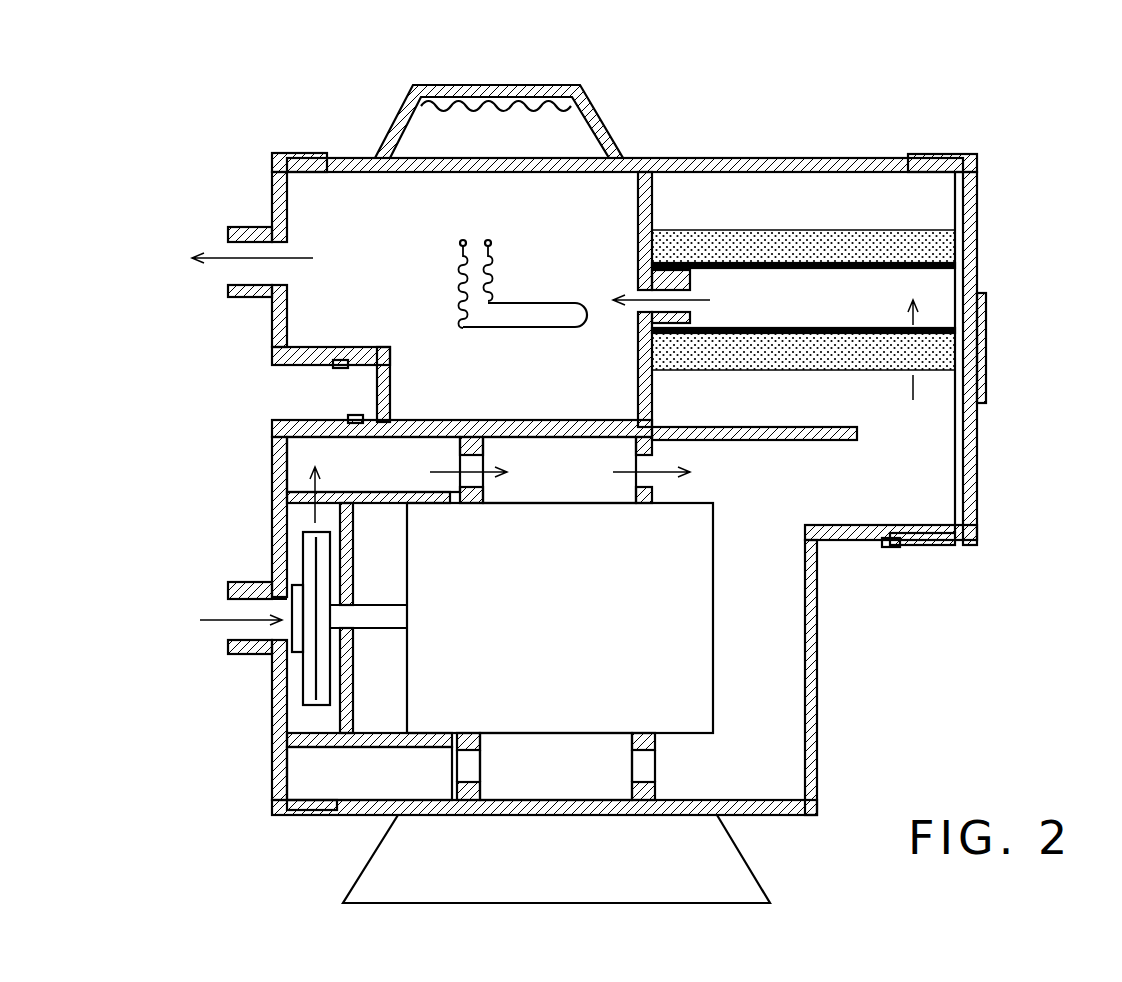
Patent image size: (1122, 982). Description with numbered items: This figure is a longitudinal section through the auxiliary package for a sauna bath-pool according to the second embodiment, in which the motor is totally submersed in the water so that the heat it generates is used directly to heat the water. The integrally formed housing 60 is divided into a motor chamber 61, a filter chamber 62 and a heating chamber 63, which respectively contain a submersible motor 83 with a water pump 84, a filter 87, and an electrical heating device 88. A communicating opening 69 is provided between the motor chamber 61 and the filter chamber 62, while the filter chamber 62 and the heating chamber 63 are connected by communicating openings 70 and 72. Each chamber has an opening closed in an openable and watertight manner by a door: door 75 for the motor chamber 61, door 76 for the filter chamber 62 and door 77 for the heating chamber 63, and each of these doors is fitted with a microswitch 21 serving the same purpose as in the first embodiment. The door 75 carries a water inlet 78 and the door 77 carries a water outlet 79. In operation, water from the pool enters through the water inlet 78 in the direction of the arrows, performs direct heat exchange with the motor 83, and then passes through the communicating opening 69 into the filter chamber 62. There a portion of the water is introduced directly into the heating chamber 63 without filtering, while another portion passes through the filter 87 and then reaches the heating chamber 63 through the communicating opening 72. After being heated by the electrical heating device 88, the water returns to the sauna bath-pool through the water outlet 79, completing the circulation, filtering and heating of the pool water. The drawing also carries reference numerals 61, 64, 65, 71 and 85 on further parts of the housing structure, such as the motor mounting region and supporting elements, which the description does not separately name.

The microswitch 21 is at (350, 418).
The housing 60 is at (810, 650).
The motor chamber 61 is at (598, 763).
The filter chamber 62 is at (840, 185).
The heating chamber 63 is at (383, 185).
The motor support leg 64 is at (485, 742).
The support 65 is at (468, 770).
The communicating opening 69 is at (918, 437).
The communicating opening 70 is at (645, 200).
The filter element 71 is at (715, 245).
The communicating opening 72 is at (668, 270).
The door 75 is at (280, 732).
The door 76 is at (967, 440).
The door 77 is at (280, 200).
The water inlet 78 is at (240, 605).
The water outlet 79 is at (255, 275).
The motor 83 is at (695, 690).
The water pump 84 is at (312, 680).
The lower chamber 85 is at (310, 740).
The filter 87 is at (955, 245).
The electrical heating device 88 is at (455, 300).